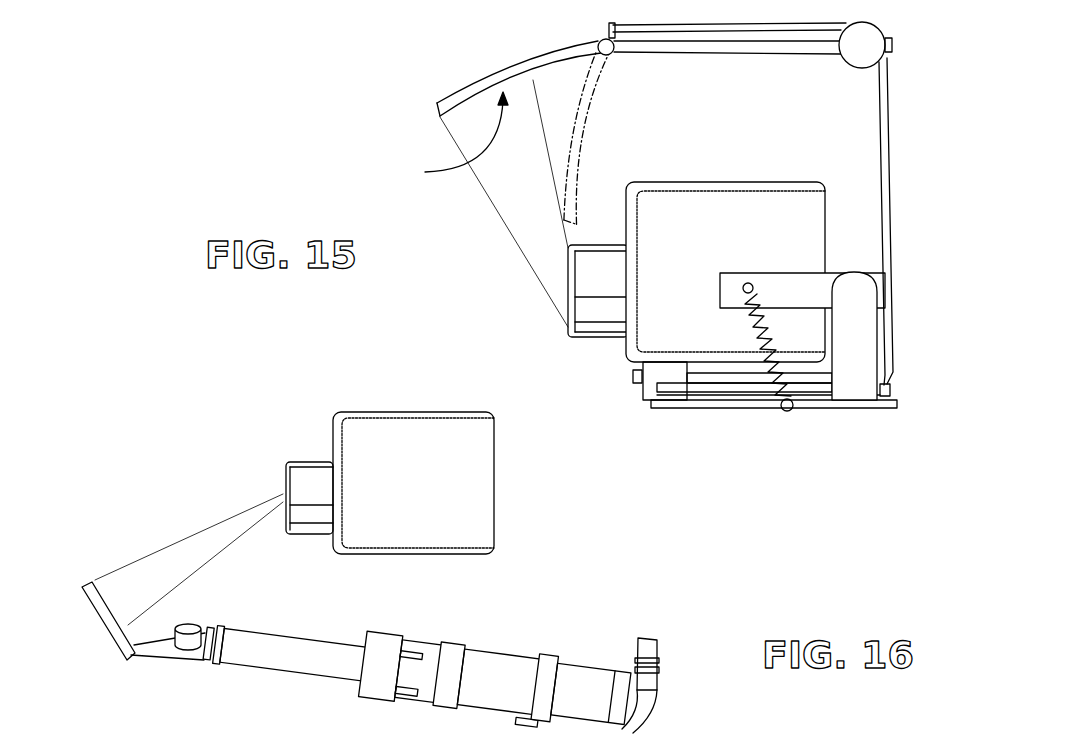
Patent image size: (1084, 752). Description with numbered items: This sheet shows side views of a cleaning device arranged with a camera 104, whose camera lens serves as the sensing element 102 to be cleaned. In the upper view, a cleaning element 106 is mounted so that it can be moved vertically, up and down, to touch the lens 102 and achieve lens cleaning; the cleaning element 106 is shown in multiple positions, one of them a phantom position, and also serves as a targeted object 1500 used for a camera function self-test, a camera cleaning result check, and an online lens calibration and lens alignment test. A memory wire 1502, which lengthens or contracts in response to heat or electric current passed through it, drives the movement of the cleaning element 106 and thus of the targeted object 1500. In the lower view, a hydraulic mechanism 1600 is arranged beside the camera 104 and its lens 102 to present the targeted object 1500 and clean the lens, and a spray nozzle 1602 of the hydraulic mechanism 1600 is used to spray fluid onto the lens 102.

In FIG. 16, the sensing element 102 is at (300, 535).
In FIG. 15, the camera 104 is at (652, 333).
In FIG. 16, the camera 104 is at (382, 425).
In FIG. 15, the cleaning element 106 is at (520, 58).
In FIG. 15, the targeted object 1500 is at (441, 138).
In FIG. 16, the targeted object 1500 is at (117, 603).
In FIG. 15, the memory wire 1502 is at (888, 162).
In FIG. 16, the hydraulic mechanism 1600 is at (513, 650).
In FIG. 16, the spray nozzle 1602 is at (177, 624).